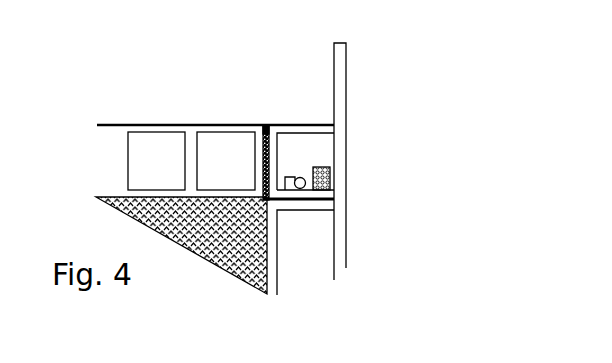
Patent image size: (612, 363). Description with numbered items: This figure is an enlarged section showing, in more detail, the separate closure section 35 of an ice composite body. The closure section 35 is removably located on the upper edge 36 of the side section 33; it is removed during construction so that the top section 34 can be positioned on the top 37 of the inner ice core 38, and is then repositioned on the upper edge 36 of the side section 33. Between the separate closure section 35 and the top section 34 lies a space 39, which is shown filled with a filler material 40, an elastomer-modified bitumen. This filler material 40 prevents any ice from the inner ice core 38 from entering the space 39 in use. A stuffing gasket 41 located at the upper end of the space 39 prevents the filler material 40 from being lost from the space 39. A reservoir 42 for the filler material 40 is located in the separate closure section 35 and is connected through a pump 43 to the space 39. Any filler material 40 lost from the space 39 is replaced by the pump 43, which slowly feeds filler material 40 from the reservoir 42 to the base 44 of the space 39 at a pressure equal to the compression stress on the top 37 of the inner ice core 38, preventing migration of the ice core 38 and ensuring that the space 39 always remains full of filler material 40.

The side section 33 is at (346, 250).
The top section 34 is at (125, 125).
The separate closure section 35 is at (346, 178).
The upper edge 36 is at (318, 208).
The top 37 is at (145, 214).
The inner ice core 38 is at (223, 232).
The space 39 is at (265, 170).
The filler material 40 is at (265, 148).
The stuffing gasket 41 is at (265, 126).
The reservoir 42 is at (330, 168).
The pump 43 is at (301, 177).
The base 44 is at (272, 196).